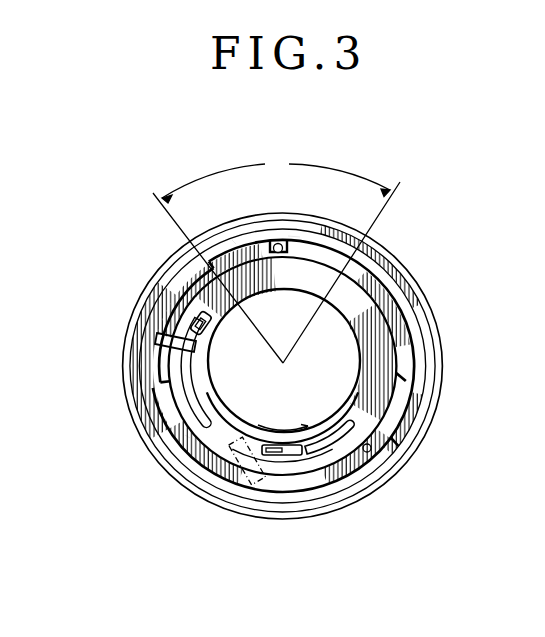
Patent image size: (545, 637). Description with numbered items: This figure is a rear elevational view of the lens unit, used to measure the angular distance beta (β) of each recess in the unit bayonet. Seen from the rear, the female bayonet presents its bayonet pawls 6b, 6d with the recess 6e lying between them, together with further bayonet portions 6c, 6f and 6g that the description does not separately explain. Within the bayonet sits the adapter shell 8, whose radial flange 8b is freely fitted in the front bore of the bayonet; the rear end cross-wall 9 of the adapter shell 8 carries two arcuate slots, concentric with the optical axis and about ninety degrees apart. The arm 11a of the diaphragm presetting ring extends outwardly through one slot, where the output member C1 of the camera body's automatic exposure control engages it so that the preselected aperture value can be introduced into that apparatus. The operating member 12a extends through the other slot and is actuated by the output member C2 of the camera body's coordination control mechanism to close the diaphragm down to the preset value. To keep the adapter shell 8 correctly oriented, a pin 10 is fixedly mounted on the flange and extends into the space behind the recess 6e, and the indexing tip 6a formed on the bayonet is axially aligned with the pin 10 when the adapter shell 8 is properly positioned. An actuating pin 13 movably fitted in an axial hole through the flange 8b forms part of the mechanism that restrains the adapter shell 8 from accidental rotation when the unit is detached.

The indexing tip 6a is at (290, 243).
The bayonet pawl 6b is at (386, 298).
The mount ring portion 6c is at (330, 464).
The bayonet pawl 6d is at (190, 290).
The recess 6e is at (232, 250).
The mount ring portion 6f is at (188, 438).
The mount ring portion 6g is at (398, 420).
The adapter shell 8 is at (325, 252).
The radial flange 8b is at (404, 405).
The rear end cross-wall 9 is at (380, 351).
The pin 10 is at (278, 243).
The arm 11a is at (210, 326).
The operating member 12a is at (269, 457).
The actuating pin 13 is at (371, 451).
The output member C1 is at (158, 337).
The output member C2 is at (246, 474).
The rotation angle beta is at (276, 253).